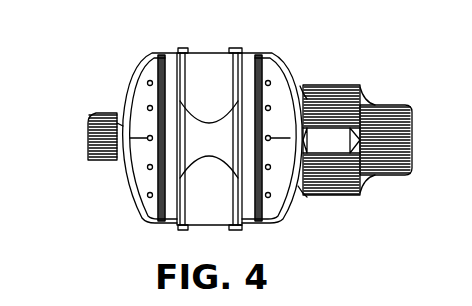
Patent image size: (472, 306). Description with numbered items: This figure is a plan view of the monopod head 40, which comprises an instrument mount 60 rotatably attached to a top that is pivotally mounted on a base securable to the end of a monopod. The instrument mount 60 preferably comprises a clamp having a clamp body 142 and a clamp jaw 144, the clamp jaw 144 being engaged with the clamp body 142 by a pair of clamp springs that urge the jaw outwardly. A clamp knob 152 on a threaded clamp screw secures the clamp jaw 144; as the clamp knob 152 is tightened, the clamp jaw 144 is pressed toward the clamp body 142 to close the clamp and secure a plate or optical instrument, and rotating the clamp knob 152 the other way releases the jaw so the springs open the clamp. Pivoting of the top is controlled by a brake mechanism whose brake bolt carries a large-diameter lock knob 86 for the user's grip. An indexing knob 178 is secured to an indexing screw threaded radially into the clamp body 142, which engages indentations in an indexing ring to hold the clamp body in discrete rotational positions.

The monopod head 40 is at (225, 122).
The instrument mount 60 is at (115, 187).
The clamp body 142 is at (153, 57).
The clamp jaw 144 is at (287, 72).
The clamp knob 152 is at (380, 106).
The lock knob 86 is at (366, 188).
The indexing knob 178 is at (88, 147).